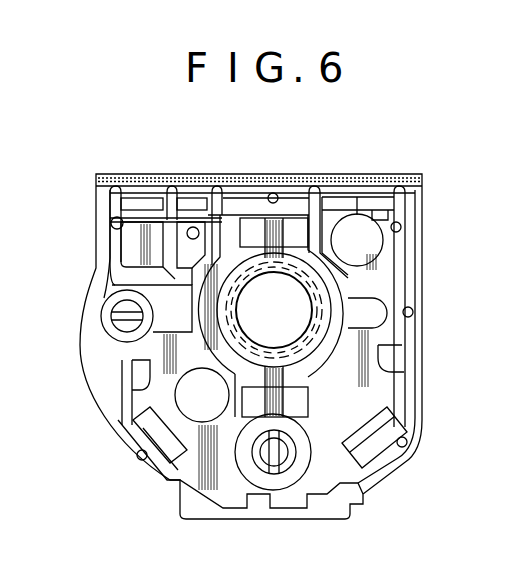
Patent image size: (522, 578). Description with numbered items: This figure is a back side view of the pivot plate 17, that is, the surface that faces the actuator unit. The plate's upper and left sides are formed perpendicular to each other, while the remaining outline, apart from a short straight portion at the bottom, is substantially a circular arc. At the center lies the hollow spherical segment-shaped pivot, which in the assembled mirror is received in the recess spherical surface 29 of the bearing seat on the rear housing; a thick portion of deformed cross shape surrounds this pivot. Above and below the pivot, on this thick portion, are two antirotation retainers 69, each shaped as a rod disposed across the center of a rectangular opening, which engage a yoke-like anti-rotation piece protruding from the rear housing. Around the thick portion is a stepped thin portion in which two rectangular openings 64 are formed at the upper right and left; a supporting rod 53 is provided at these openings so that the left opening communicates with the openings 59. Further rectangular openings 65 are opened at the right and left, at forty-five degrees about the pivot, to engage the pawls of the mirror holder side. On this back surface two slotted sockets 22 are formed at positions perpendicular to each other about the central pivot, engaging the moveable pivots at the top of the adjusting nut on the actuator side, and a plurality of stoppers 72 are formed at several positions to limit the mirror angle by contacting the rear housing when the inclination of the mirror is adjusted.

The pivot plate 17 is at (426, 169).
The socket 22 is at (116, 311).
The recess spherical surface 29 is at (290, 322).
The supporting rod 53 is at (185, 182).
The opening 59 is at (384, 238).
The rectangular opening 64 is at (140, 205).
The rectangular opening 65 is at (386, 427).
The antirotation retainer 69 is at (253, 226).
The stopper 72 is at (111, 223).